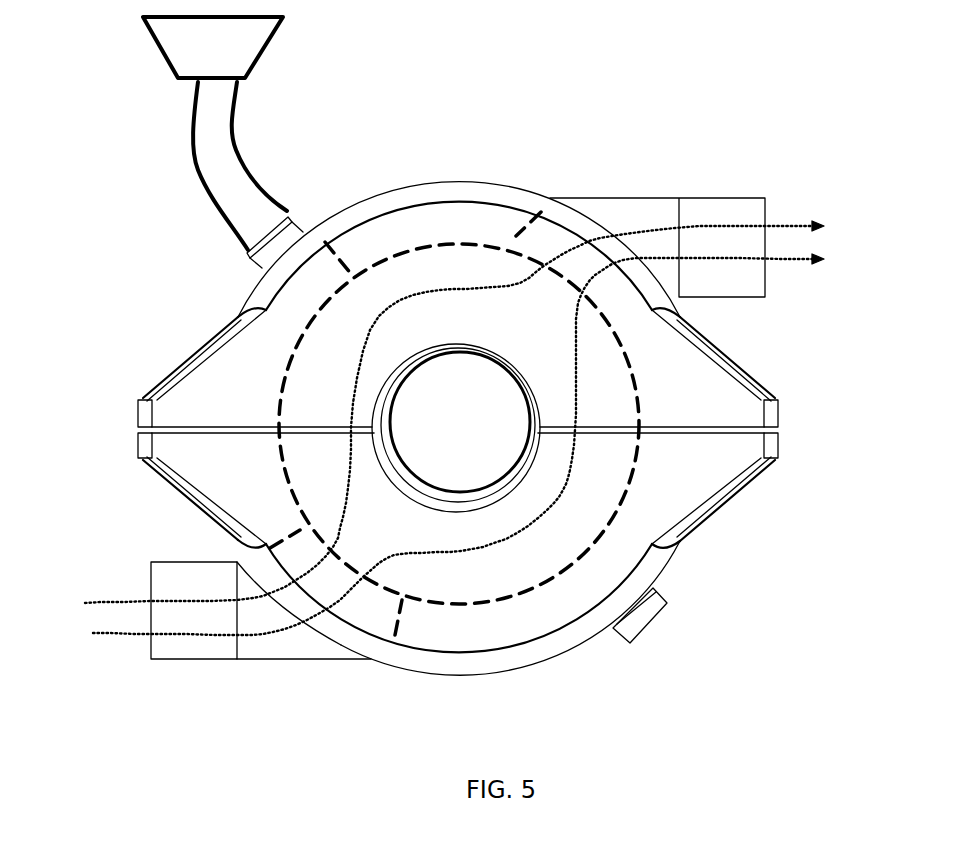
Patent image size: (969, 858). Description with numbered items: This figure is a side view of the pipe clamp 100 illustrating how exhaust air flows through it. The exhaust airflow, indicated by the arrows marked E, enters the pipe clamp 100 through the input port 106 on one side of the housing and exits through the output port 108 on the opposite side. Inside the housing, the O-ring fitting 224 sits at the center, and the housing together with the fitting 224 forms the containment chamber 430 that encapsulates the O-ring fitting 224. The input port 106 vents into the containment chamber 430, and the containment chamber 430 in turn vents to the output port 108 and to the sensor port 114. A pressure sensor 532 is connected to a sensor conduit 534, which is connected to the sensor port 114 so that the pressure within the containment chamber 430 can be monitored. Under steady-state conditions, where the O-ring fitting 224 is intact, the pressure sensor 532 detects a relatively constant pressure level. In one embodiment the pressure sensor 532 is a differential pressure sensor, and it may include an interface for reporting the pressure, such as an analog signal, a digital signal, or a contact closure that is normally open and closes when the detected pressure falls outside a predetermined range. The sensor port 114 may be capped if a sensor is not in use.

The pipe clamp 100 is at (170, 268).
The input port 106 is at (197, 640).
The output port 108 is at (708, 215).
The sensor port 114 is at (290, 212).
The O-ring fitting 224 is at (456, 428).
The containment chamber 430 is at (632, 483).
The pressure sensor 532 is at (262, 53).
The sensor conduit 534 is at (217, 128).
The exhaust airflow E is at (780, 220).